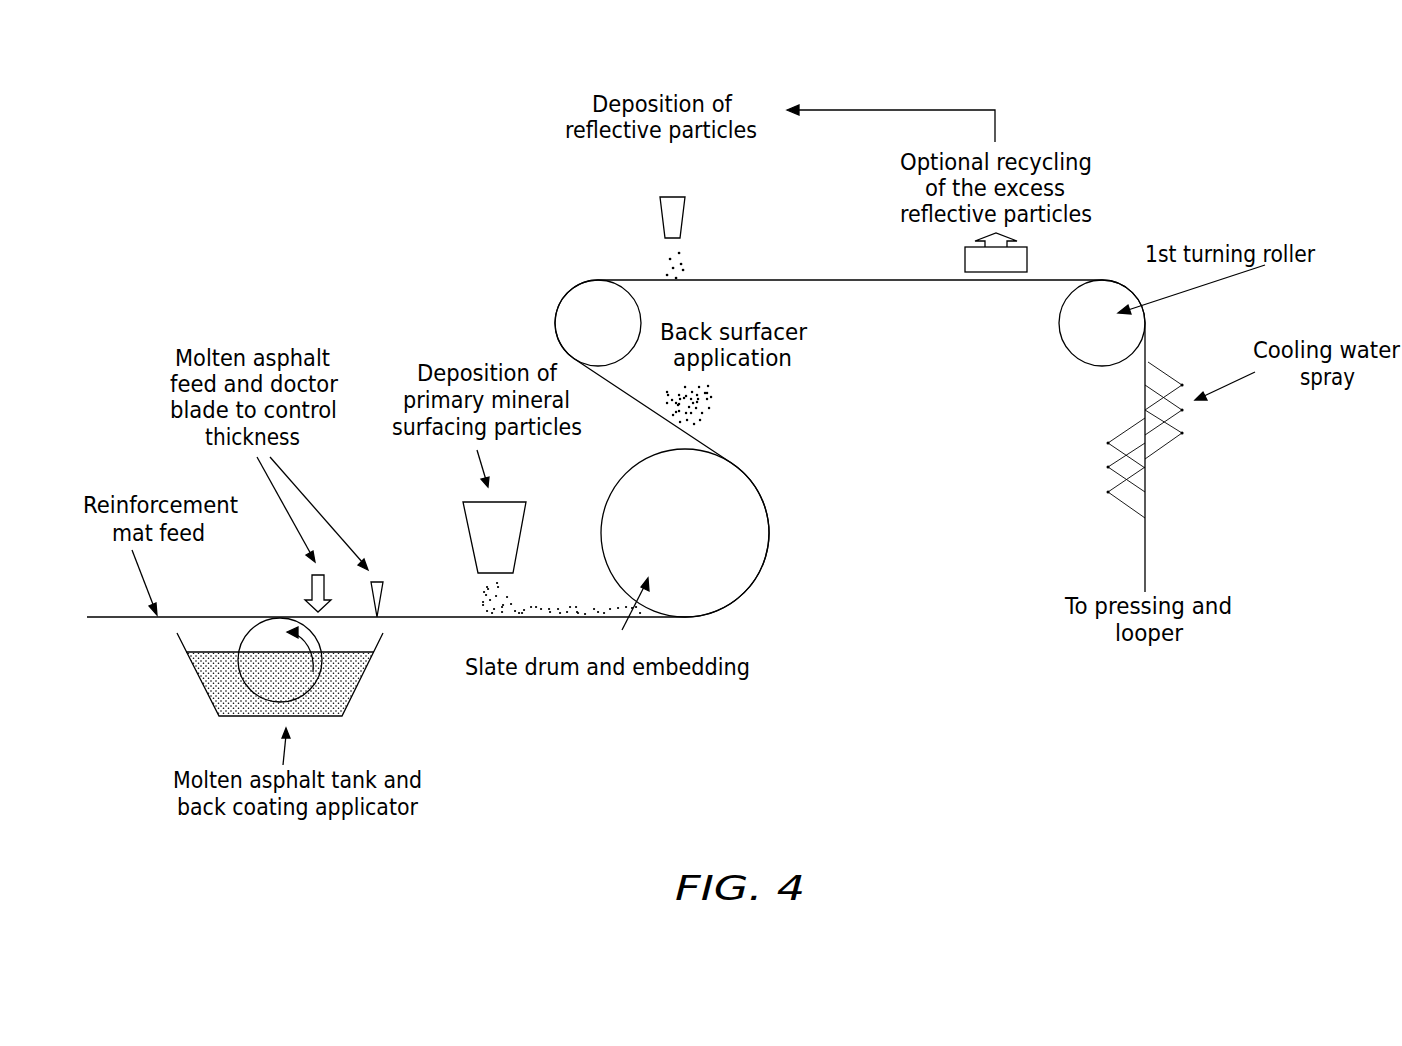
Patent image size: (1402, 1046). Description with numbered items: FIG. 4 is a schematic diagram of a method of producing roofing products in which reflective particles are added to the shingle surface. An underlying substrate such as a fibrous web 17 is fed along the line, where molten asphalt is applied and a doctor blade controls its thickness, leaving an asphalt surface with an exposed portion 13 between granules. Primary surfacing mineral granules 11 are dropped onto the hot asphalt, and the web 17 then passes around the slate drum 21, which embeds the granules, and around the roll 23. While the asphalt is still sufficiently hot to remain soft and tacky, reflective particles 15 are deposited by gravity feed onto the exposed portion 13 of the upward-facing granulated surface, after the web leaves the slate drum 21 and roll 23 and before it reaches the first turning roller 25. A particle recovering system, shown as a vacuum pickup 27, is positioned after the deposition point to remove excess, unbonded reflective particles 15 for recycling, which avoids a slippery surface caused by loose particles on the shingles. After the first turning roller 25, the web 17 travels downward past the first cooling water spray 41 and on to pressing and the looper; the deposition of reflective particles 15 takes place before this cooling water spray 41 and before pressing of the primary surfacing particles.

The primary surfacing mineral granules 11 is at (500, 597).
The exposed portion 13 is at (310, 598).
The reflective particles 15 is at (676, 263).
The web 17 is at (125, 622).
The slate drum 21 is at (758, 520).
The roll 23 is at (563, 298).
The first turning roller 25 is at (1073, 333).
The vacuum pickup 27 is at (1027, 266).
The first cooling water spray 41 is at (1158, 398).